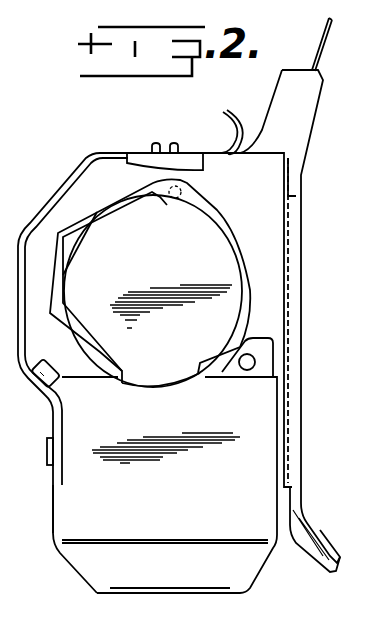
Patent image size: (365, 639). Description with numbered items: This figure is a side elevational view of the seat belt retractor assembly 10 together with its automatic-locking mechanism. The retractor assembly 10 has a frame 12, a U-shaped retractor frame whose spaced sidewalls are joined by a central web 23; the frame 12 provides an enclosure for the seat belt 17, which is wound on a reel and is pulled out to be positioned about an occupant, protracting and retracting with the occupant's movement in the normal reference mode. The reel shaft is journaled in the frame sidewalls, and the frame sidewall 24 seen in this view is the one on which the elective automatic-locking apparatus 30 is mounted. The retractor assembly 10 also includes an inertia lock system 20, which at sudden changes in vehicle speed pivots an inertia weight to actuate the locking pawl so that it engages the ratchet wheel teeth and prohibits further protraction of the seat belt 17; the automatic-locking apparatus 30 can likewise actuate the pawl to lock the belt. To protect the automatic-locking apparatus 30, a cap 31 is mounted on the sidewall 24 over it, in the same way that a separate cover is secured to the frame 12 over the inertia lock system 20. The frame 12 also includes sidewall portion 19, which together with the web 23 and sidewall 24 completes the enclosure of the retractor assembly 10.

The seat belt retractor assembly 10 is at (115, 136).
The frame 12 is at (298, 220).
The seat belt 17 is at (318, 39).
The housing side wall 19 is at (93, 571).
The inertia-locking mechanism 20 is at (168, 592).
The central web 23 is at (318, 245).
The frame sidewall 24 is at (73, 194).
The automatic-locking apparatus 30 is at (222, 211).
The cap 31 is at (226, 275).